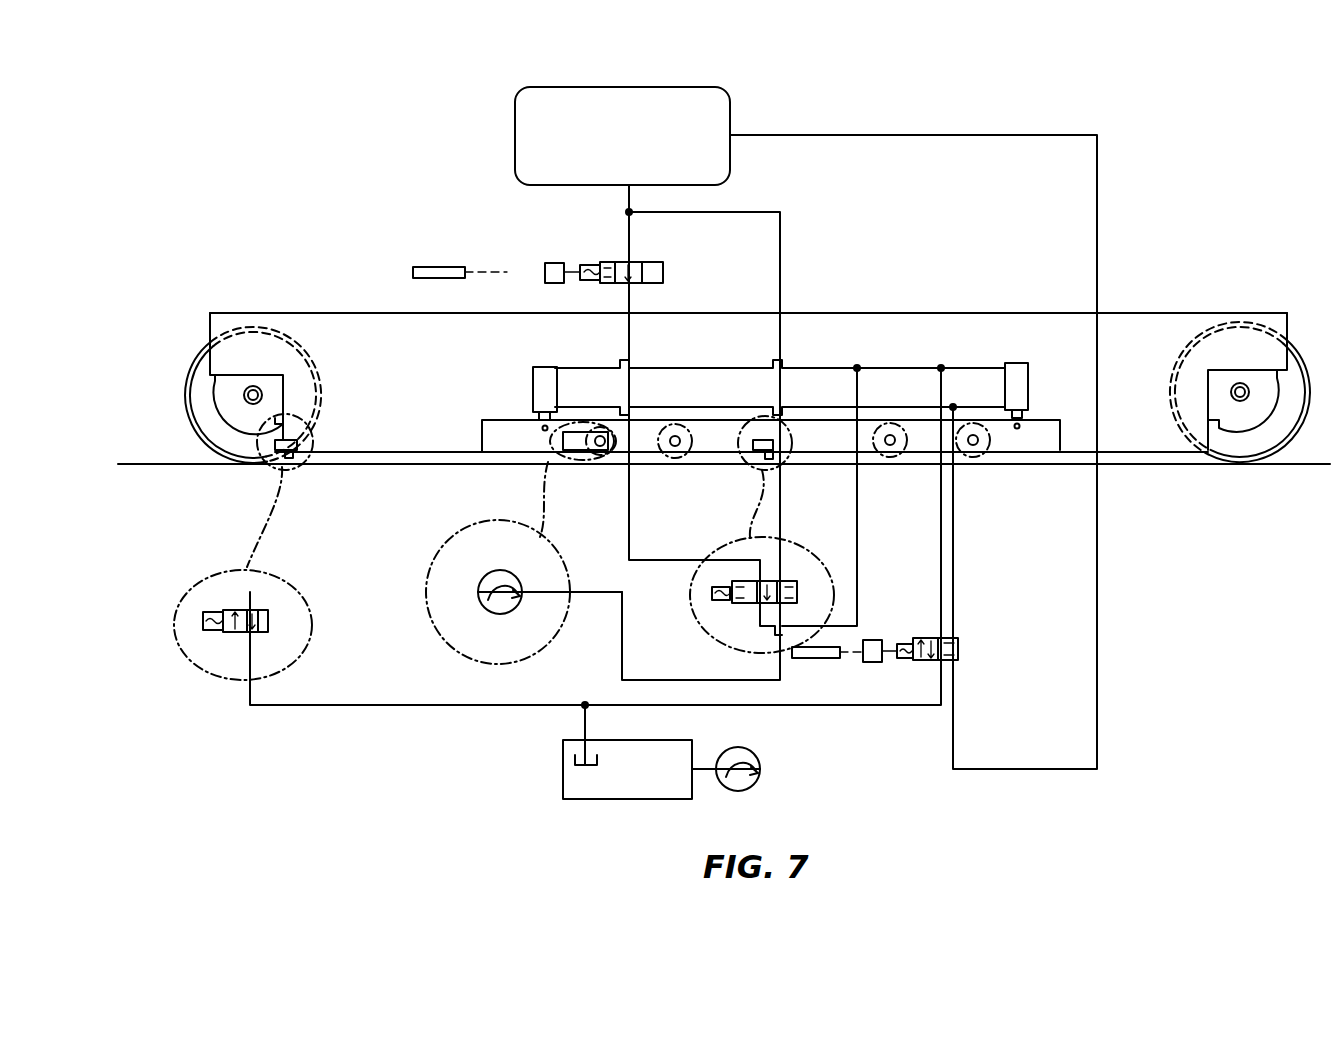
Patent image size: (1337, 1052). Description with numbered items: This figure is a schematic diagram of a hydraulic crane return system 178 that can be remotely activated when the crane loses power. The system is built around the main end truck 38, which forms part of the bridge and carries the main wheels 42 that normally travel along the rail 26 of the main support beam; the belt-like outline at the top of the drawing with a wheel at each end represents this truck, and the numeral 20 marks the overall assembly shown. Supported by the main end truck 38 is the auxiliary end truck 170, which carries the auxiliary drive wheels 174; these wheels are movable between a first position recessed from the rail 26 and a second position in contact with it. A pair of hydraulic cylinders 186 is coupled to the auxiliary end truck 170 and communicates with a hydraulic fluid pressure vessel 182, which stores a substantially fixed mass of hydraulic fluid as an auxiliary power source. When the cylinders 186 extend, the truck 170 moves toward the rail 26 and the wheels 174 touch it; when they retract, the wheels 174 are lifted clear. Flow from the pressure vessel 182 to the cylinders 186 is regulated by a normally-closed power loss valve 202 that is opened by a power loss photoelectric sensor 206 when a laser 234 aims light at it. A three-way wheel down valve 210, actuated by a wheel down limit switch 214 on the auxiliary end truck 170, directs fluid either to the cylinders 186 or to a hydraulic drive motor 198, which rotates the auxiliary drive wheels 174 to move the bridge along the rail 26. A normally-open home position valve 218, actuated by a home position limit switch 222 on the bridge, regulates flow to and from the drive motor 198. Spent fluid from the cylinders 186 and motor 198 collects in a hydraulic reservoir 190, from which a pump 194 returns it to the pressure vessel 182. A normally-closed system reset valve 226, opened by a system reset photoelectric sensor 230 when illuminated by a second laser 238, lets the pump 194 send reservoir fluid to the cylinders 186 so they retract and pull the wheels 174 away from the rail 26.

The conveyor system 20 is at (919, 310).
The rail 26 is at (393, 465).
The main end truck 38 is at (342, 328).
The main wheels 42 is at (208, 418).
The auxiliary end truck 170 is at (1018, 432).
The auxiliary drive wheels 174 is at (888, 456).
The crane return system 178 is at (1132, 740).
The hydraulic fluid pressure vessel 182 is at (558, 92).
The hydraulic cylinders 186 is at (533, 393).
The hydraulic reservoir 190 is at (640, 792).
The pump 194 is at (742, 786).
The hydraulic drive motor 198 is at (500, 605).
The power loss valve 202 is at (617, 262).
The power loss photoelectric sensor 206 is at (548, 268).
The wheel down valve 210 is at (797, 592).
The wheel down limit switch 214 is at (771, 462).
The home position valve 218 is at (240, 608).
The home position limit switch 222 is at (293, 455).
The system reset valve 226 is at (958, 650).
The system reset photoelectric sensor 230 is at (870, 663).
The laser 234 is at (447, 266).
The laser 238 is at (818, 659).